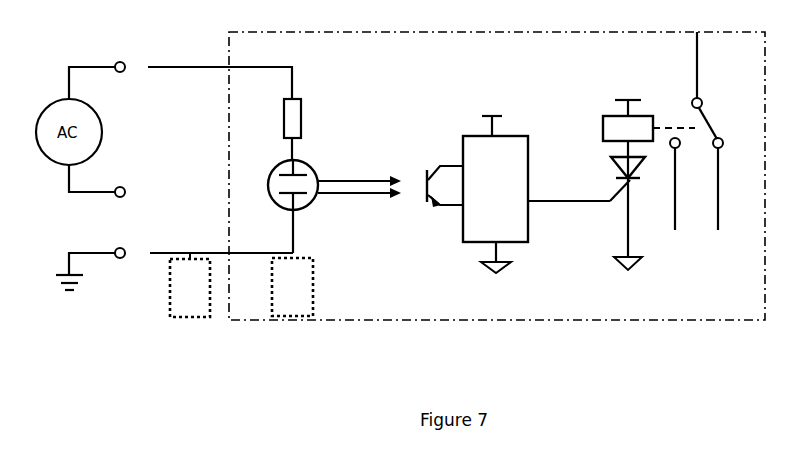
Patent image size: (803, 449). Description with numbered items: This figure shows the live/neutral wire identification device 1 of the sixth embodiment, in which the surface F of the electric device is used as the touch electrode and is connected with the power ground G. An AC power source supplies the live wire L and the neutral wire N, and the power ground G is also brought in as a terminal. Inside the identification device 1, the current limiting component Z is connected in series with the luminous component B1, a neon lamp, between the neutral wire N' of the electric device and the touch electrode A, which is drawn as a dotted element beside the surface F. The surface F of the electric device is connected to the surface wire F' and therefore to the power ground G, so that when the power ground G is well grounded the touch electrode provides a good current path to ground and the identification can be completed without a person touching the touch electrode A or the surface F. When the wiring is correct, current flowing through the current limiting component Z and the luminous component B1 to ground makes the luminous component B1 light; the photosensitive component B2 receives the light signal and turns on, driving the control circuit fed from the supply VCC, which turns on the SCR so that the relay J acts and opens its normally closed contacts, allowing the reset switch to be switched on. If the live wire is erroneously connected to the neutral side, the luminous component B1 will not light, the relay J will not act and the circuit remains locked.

The live/neutral wire identification device 1 is at (415, 311).
The live wire of the power source L is at (97, 69).
The neutral wire of the power source N is at (97, 181).
The power ground G is at (90, 259).
The neutral wire of the electric device N' is at (220, 70).
The current limiting component Z is at (305, 129).
The luminous component B1 is at (334, 206).
The photosensitive component B2 is at (445, 196).
The surface wire of the electric device F' is at (221, 240).
The electric device surface F is at (169, 295).
The touch electrode A is at (306, 287).
The relay J is at (536, 194).
The supply voltage VCC is at (558, 98).